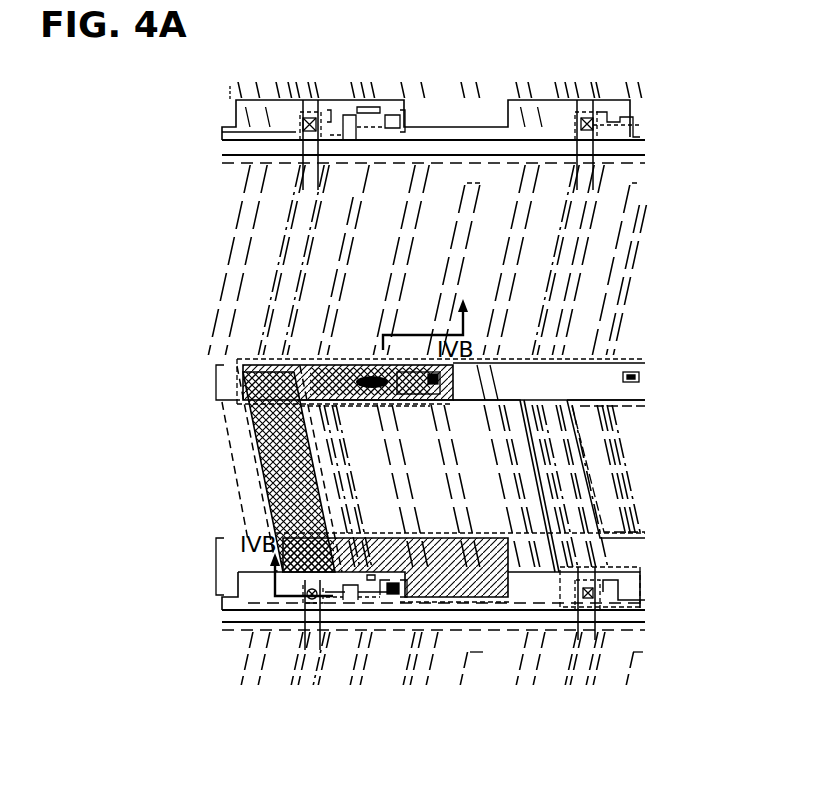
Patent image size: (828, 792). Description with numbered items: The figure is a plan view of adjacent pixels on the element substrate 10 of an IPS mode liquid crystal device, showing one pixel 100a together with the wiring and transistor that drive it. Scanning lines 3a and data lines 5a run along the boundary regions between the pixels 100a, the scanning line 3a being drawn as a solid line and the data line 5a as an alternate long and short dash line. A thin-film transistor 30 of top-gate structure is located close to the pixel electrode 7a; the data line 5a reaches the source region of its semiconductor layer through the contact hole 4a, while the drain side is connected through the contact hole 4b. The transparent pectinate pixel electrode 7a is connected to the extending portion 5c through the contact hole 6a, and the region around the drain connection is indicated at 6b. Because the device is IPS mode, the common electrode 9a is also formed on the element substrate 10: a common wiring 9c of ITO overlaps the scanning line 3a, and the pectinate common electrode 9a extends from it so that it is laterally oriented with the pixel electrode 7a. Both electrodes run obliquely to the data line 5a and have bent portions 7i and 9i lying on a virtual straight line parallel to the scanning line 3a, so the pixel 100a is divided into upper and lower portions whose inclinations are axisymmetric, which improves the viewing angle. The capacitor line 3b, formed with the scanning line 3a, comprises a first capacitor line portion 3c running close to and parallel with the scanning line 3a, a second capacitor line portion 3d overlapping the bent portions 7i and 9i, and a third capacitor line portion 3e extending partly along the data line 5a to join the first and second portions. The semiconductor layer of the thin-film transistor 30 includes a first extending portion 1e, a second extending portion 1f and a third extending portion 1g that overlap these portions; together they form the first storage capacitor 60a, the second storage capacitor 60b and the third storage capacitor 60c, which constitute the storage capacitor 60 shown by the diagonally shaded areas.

The element substrate 10 is at (707, 257).
The pixel 100a is at (440, 150).
The scanning line 3a is at (214, 141).
The capacitor line 3b is at (356, 484).
The first capacitor line portion 3c is at (212, 568).
The second capacitor line portion 3d is at (214, 382).
The third capacitor line portion 3e is at (252, 455).
The data line 5a is at (321, 80).
The extending portion 5c is at (365, 496).
The contact hole 6a is at (427, 622).
The drain electrode extension 6b is at (364, 395).
The contact hole 4a is at (313, 603).
The contact hole 4b is at (397, 602).
The thin-film transistor 30 is at (354, 626).
The storage capacitor 60 is at (522, 486).
The first storage capacitor 60a is at (505, 552).
The second storage capacitor 60b is at (312, 482).
The third storage capacitor 60c is at (437, 405).
The common electrode 9a is at (503, 264).
The common wiring 9c is at (676, 603).
The bent portion 9i is at (491, 368).
The pixel electrode 7a is at (404, 350).
The bent portion 7i is at (434, 360).
The first extending portion 1e is at (470, 653).
The second extending portion 1f is at (345, 352).
The third extending portion 1g is at (250, 495).